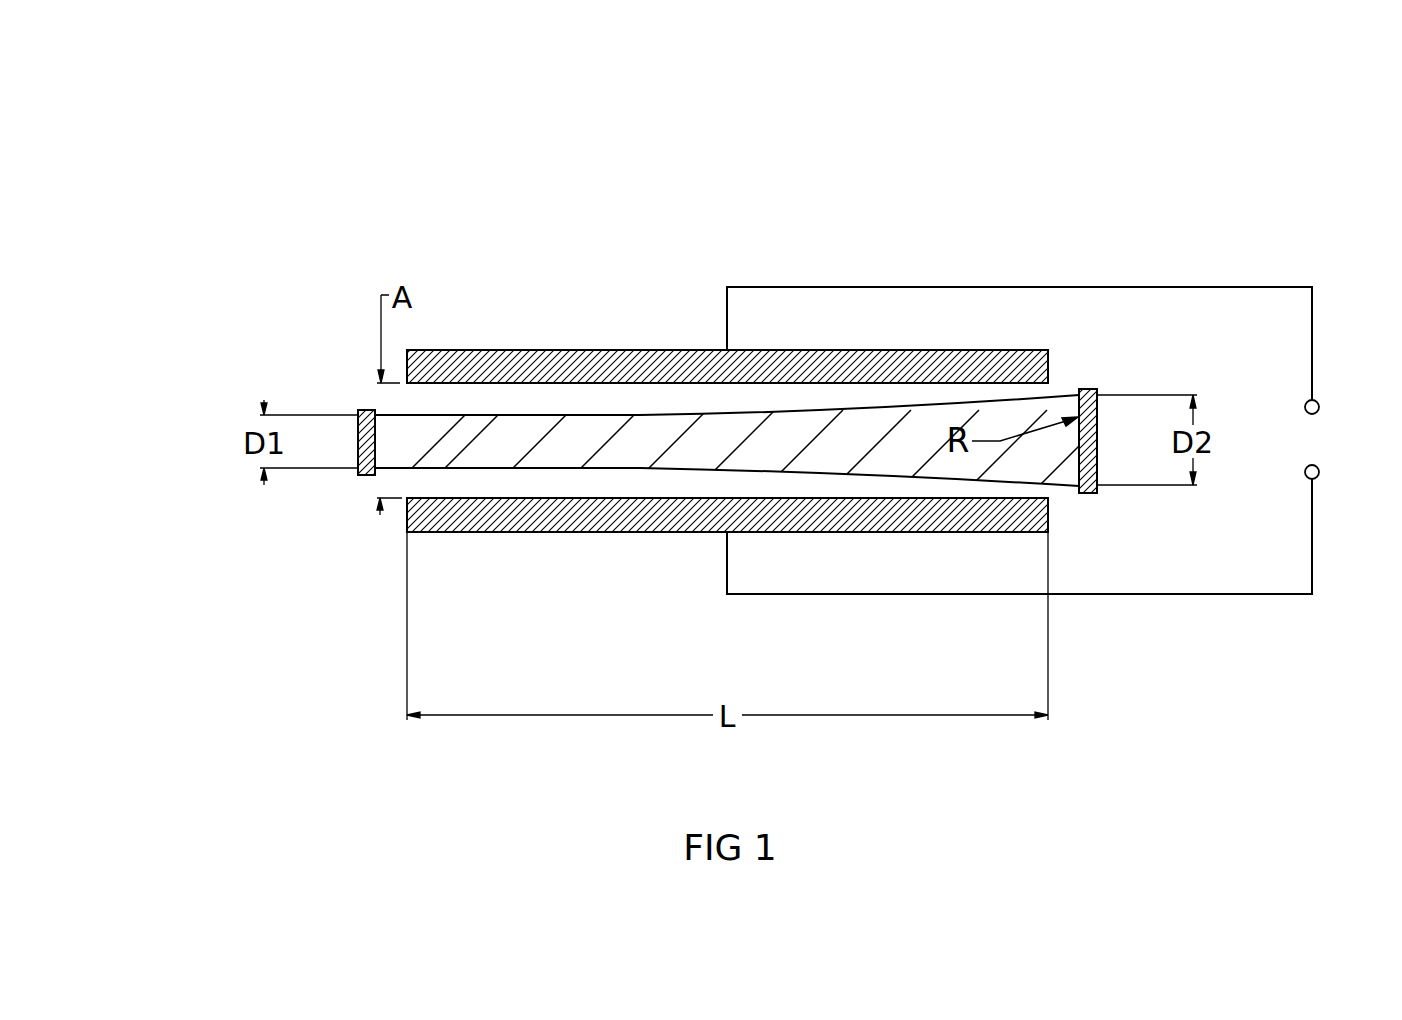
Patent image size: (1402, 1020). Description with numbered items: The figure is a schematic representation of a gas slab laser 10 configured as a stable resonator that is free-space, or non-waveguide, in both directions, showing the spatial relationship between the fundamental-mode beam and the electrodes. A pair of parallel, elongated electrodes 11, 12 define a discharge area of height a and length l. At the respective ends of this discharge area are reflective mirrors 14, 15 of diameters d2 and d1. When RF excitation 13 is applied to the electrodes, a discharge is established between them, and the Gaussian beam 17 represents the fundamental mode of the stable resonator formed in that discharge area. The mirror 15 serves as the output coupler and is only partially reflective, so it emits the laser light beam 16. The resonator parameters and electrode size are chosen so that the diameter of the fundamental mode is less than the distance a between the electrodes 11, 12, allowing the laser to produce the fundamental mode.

The gas slab laser 10 is at (575, 232).
The electrode 11 is at (679, 357).
The electrode 12 is at (648, 518).
The RF excitation 13 is at (1323, 457).
The reflective mirror 14 is at (1090, 493).
The output coupler mirror 15 is at (362, 477).
The laser light beam 16 is at (218, 442).
The Gaussian beam 17 is at (437, 458).